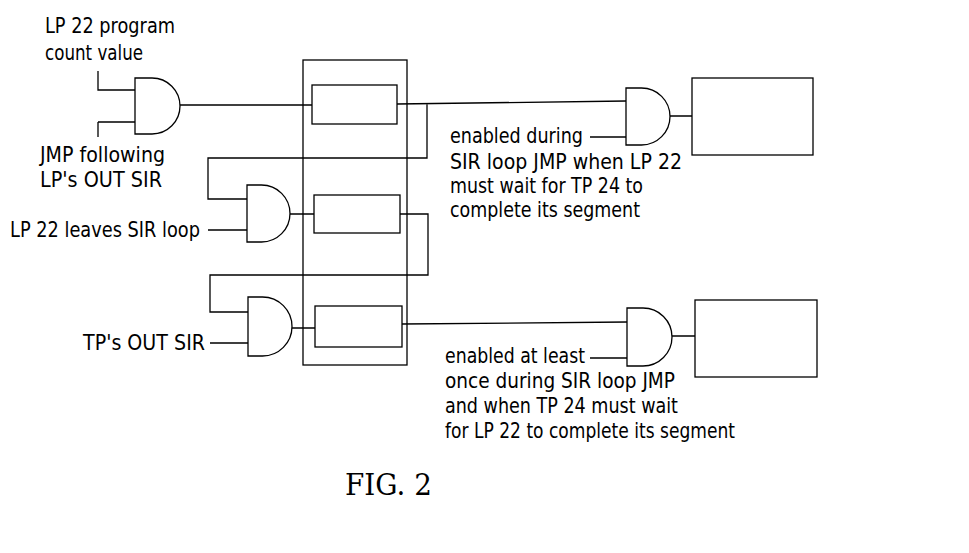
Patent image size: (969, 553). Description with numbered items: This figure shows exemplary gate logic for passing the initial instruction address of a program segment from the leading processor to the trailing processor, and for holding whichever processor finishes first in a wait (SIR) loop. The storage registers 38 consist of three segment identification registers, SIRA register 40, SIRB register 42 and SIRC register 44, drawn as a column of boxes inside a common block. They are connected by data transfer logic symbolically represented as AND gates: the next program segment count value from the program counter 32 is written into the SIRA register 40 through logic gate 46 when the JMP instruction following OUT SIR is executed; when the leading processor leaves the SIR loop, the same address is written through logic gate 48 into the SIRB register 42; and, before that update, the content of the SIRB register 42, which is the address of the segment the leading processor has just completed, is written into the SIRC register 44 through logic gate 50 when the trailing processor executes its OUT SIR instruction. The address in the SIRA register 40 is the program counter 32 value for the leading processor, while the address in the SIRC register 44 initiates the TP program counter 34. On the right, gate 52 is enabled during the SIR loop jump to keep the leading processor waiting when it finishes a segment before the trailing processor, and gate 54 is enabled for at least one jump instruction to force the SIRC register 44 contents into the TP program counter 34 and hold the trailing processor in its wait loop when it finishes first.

The program counter 32 is at (730, 78).
The TP program counter 34 is at (723, 300).
The storage registers 38 is at (373, 60).
The SIRA register 40 is at (397, 96).
The SIRB register 42 is at (347, 233).
The SIRC register 44 is at (402, 314).
The logic gate 46 is at (150, 78).
The logic gate 48 is at (258, 185).
The logic gate 50 is at (255, 356).
The gate 52 is at (635, 88).
The gate 54 is at (638, 308).